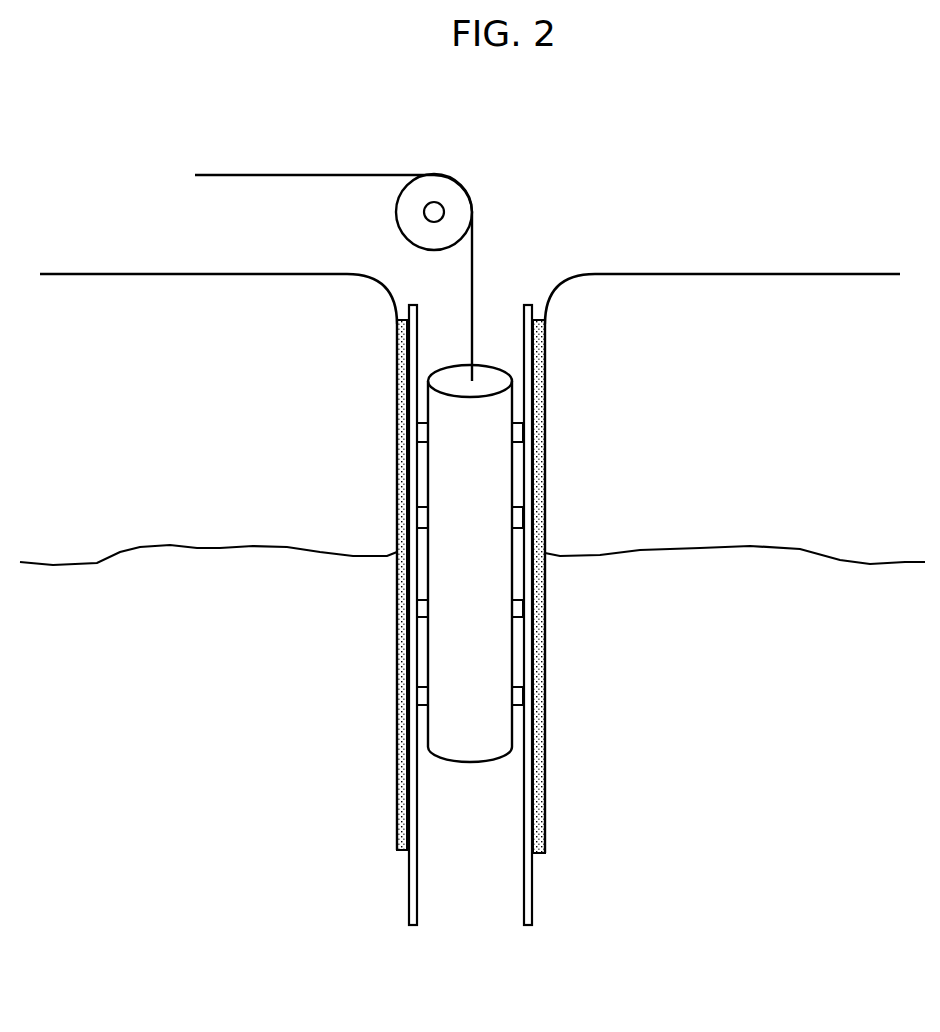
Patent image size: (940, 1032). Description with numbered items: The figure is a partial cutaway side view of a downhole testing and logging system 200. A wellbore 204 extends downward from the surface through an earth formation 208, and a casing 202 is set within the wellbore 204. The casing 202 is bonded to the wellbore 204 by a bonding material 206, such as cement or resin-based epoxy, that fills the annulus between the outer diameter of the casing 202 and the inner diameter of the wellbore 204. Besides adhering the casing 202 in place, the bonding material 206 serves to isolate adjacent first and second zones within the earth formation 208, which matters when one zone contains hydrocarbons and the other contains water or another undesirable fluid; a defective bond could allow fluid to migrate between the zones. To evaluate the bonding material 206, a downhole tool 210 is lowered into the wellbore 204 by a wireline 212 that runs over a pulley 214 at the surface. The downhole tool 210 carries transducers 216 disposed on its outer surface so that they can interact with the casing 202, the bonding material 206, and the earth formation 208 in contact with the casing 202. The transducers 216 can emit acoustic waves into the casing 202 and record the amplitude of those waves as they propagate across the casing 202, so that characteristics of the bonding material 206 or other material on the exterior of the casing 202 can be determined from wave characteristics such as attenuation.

The downhole testing and logging system 200 is at (549, 200).
The casing 202 is at (522, 314).
The wellbore 204 is at (542, 303).
The bonding material 206 is at (401, 781).
The earth formation 208 is at (176, 454).
The downhole tools 210 is at (493, 489).
The wireline 212 is at (266, 173).
The pulley 214 is at (415, 231).
The transducers 216 is at (420, 510).